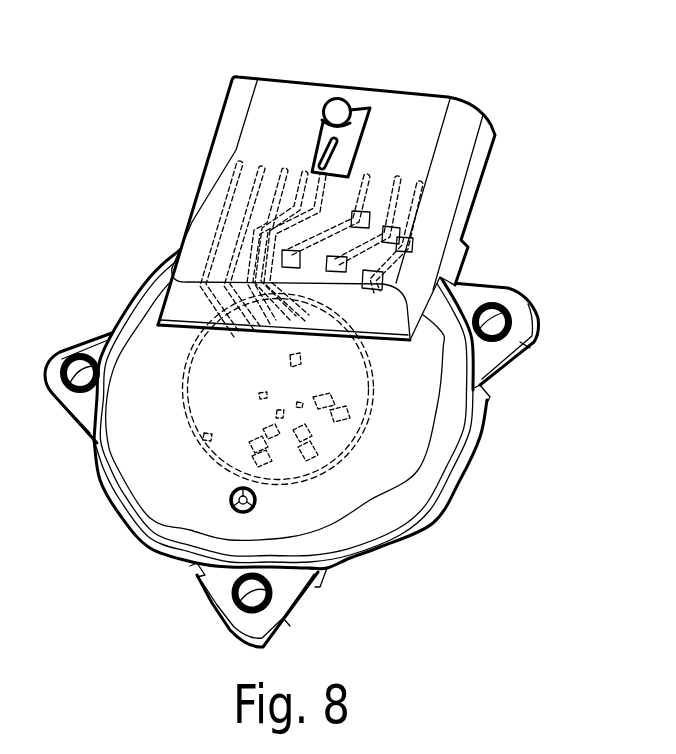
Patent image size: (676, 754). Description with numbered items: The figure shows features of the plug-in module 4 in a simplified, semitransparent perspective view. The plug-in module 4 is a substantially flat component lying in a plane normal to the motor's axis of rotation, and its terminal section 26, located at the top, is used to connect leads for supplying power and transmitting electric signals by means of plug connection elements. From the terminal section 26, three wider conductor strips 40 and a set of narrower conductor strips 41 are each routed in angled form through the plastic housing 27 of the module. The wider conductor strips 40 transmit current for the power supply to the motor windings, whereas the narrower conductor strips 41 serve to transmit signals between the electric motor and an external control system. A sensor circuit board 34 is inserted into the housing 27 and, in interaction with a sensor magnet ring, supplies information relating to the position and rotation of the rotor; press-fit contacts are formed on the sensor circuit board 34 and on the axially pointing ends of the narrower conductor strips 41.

The plug-in module 4 is at (140, 80).
The terminal section 26 is at (487, 165).
The housing 27 is at (446, 505).
The sensor circuit board 34 is at (210, 413).
The conductor strips 40 is at (433, 217).
The narrower conductor strips 41 is at (237, 178).